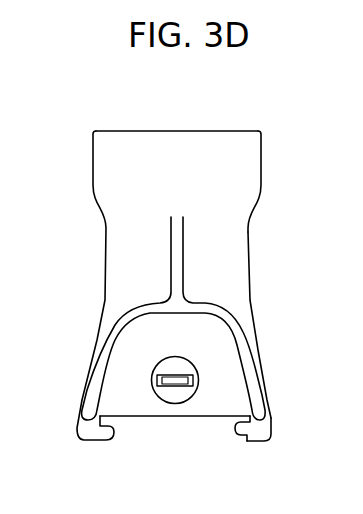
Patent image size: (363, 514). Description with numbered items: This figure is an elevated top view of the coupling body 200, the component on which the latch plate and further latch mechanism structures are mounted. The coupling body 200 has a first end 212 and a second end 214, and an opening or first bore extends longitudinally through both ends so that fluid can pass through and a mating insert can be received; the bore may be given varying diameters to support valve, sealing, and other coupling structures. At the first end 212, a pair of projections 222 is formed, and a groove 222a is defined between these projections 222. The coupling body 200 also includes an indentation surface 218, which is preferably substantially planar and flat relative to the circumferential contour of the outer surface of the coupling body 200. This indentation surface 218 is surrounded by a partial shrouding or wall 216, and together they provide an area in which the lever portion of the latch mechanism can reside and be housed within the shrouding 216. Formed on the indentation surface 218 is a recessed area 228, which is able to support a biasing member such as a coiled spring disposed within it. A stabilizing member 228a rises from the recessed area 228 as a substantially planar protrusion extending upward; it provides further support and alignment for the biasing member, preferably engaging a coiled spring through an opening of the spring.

The coupling body 200 is at (88, 111).
The first end 212 is at (268, 442).
The second end 214 is at (210, 132).
The partial shrouding or wall 216 is at (230, 315).
The indentation surface 218 is at (287, 325).
The projections 222 is at (247, 442).
The groove 222a is at (212, 416).
The recessed area 228 is at (157, 363).
The stabilizing member 228a is at (167, 388).